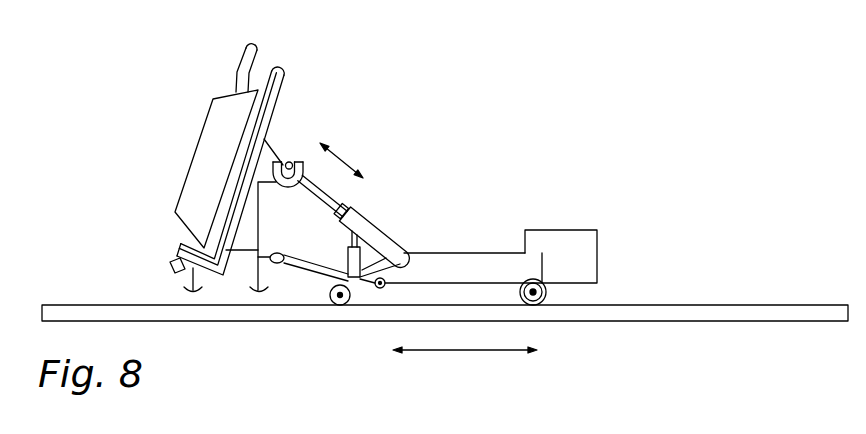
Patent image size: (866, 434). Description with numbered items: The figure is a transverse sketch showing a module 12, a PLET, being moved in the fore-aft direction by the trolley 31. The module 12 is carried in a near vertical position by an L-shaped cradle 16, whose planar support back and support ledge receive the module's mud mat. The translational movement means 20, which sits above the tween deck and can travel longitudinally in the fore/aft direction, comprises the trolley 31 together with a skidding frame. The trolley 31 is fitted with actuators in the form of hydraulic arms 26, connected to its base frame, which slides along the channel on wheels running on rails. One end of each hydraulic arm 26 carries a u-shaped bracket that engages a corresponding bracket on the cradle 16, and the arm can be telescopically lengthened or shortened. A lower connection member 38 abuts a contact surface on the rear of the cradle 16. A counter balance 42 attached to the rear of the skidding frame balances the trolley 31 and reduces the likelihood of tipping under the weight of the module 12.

The module 12 is at (212, 170).
The cradle 16 is at (279, 107).
The translational movement means 20 is at (467, 110).
The hydraulic arm 26 is at (365, 197).
The trolley 31 is at (453, 273).
The lower connection member 38 is at (317, 267).
The counter balance 42 is at (583, 243).